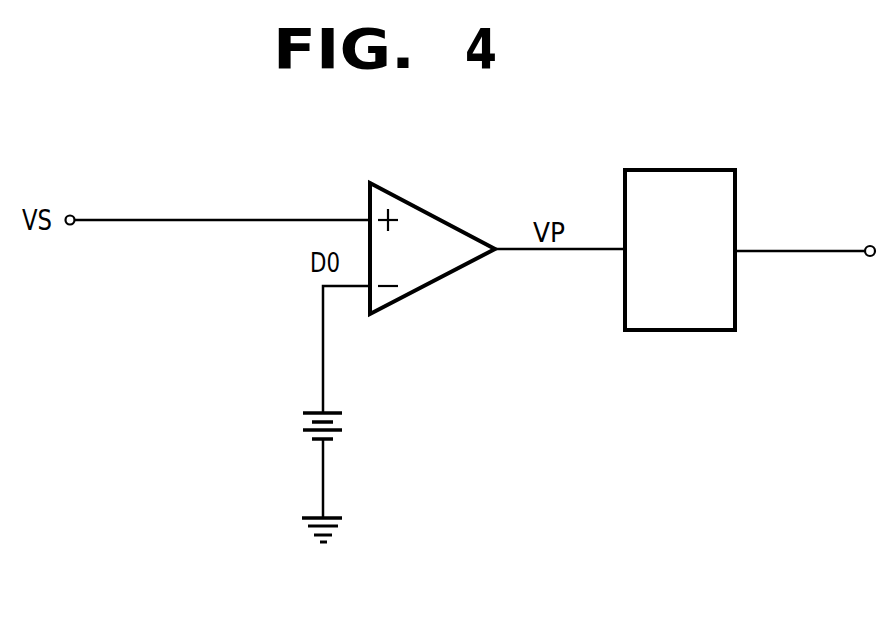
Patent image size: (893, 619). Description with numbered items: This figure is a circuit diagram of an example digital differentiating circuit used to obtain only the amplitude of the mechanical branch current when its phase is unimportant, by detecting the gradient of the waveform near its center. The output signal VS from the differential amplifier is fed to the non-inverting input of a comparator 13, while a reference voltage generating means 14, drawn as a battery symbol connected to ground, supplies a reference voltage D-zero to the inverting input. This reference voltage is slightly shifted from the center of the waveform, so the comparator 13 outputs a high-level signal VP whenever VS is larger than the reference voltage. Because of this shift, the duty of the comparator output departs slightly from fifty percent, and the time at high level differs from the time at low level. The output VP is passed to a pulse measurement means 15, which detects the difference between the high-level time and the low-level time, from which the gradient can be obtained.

The comparator 13 is at (435, 216).
The reference voltage generating means 14 is at (347, 424).
The pulse measurement means 15 is at (706, 170).